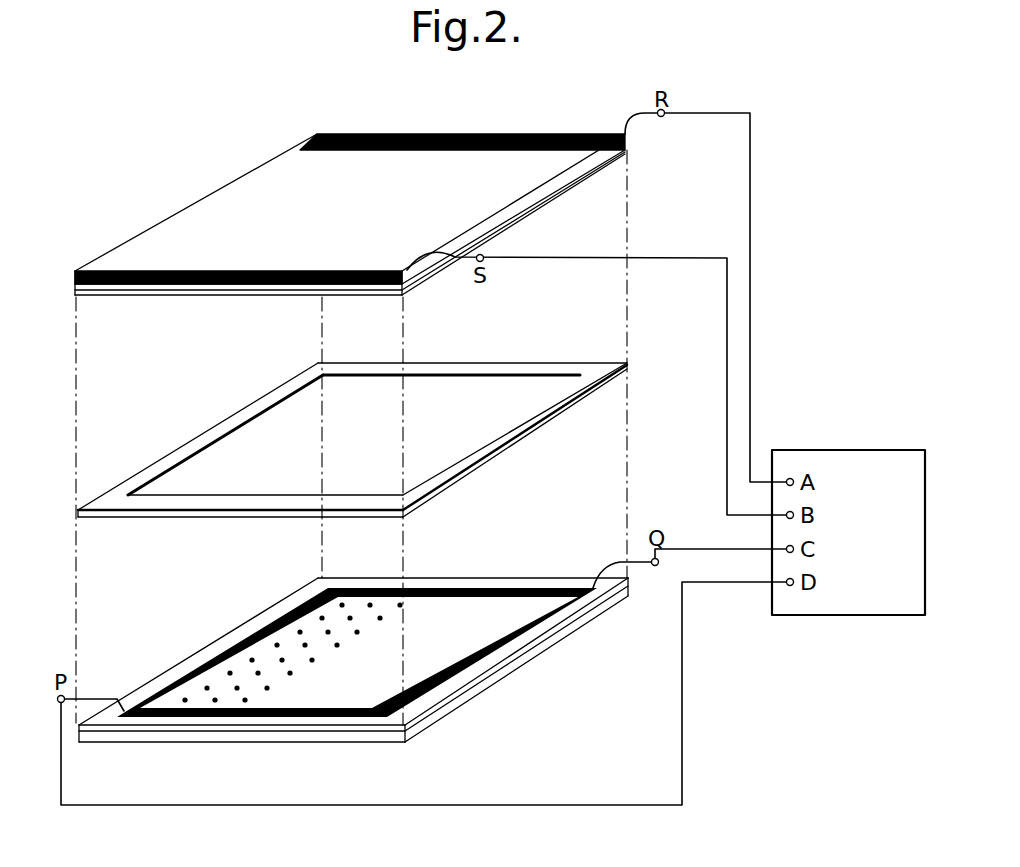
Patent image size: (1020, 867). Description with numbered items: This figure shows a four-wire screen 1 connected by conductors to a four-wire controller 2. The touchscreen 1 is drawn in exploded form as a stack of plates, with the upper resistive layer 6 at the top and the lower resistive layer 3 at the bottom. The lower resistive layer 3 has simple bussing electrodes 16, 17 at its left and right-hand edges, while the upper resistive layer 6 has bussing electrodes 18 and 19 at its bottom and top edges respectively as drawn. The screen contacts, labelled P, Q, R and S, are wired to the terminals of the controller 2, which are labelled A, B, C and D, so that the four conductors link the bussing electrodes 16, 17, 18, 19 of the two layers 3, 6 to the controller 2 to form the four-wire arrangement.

The touchscreen 1 is at (542, 116).
The controller 2 is at (852, 440).
The lower resistive layer 3 is at (459, 637).
The upper resistive layer 6 is at (118, 296).
The bussing electrode 16 is at (197, 665).
The bussing electrode 17 is at (483, 661).
The bussing electrode 18 is at (148, 271).
The bussing electrode 19 is at (371, 134).